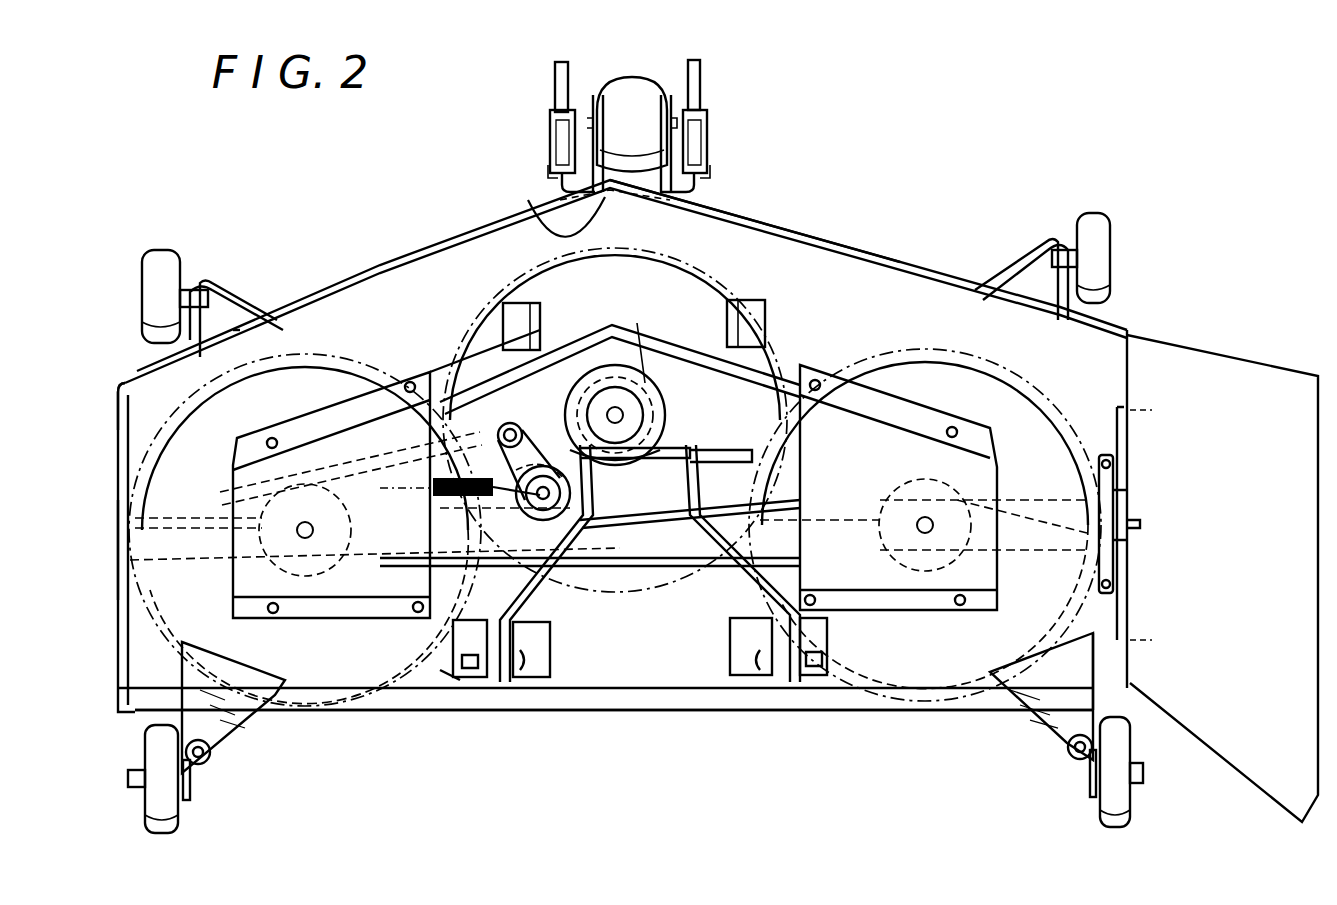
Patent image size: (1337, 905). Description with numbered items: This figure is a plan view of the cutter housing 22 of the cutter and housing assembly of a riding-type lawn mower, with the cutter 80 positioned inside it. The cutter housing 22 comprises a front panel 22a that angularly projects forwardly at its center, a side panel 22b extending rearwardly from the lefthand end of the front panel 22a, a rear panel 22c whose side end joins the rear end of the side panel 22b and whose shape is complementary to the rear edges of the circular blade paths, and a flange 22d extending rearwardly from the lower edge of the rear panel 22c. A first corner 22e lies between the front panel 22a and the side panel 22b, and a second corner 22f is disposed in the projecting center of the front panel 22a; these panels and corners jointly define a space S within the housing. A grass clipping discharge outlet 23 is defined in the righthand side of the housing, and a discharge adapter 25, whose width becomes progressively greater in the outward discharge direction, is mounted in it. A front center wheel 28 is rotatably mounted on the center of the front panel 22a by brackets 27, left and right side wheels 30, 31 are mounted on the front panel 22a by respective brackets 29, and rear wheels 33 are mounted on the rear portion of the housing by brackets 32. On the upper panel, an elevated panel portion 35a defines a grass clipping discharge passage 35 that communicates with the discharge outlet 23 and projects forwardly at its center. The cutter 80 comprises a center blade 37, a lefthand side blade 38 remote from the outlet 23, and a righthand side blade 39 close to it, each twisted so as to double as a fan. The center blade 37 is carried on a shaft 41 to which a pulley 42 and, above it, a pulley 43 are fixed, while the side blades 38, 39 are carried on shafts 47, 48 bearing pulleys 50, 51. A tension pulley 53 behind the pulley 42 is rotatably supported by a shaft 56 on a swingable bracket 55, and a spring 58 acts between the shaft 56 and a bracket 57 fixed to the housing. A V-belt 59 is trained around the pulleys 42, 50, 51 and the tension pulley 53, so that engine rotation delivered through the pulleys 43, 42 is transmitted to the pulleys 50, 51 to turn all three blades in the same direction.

The cutter housing 22 is at (820, 130).
The front panel 22a is at (740, 203).
The side panel 22b is at (130, 570).
The rear panel 22c is at (437, 662).
The flange 22d is at (640, 672).
The first corner 22e is at (170, 398).
The second corner 22f is at (533, 210).
The grass clipping discharge outlet 23 is at (1125, 352).
The discharge adapter 25 is at (1197, 347).
The brackets 27 is at (582, 133).
The front center wheel 28 is at (627, 85).
The brackets 29 is at (205, 292).
The left side wheel 30 is at (160, 250).
The right side wheel 31 is at (1100, 214).
The brackets 32 is at (227, 723).
The rear wheels 33 is at (167, 807).
The grass clipping discharge passage 35 is at (847, 283).
The elevated panel portion 35a is at (413, 287).
The center blade 37 is at (455, 380).
The lefthand side blade 38 is at (333, 330).
The righthand side blade 39 is at (900, 300).
The shaft 41 is at (616, 425).
The pulley 42 is at (700, 290).
The pulley 43 is at (790, 330).
The shaft 47 is at (340, 573).
The shaft 48 is at (925, 535).
The pulley 50 is at (313, 573).
The pulley 51 is at (932, 560).
The tension pulley 53 is at (583, 560).
The bracket 55 is at (415, 285).
The shaft 56 is at (468, 476).
The bracket 57 is at (240, 330).
The spring 58 is at (300, 310).
The V-belt 59 is at (717, 560).
The cutter 80 is at (755, 725).
The space S is at (335, 300).